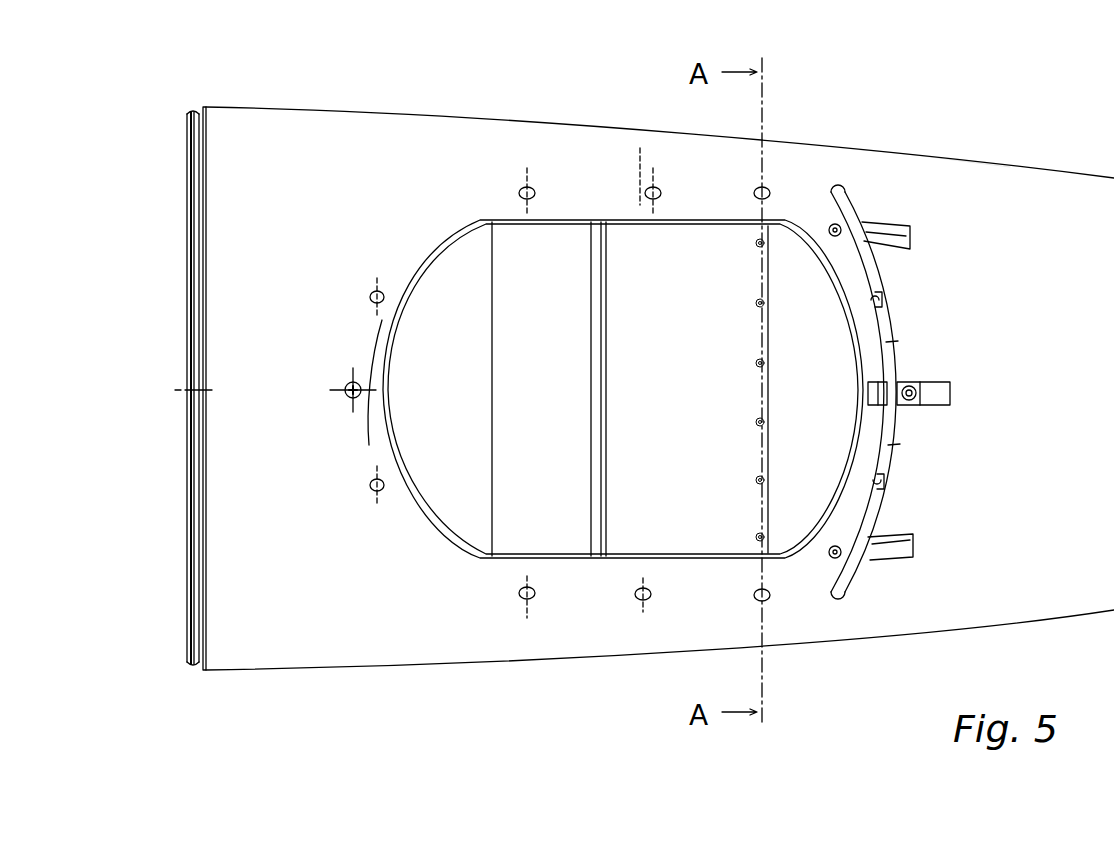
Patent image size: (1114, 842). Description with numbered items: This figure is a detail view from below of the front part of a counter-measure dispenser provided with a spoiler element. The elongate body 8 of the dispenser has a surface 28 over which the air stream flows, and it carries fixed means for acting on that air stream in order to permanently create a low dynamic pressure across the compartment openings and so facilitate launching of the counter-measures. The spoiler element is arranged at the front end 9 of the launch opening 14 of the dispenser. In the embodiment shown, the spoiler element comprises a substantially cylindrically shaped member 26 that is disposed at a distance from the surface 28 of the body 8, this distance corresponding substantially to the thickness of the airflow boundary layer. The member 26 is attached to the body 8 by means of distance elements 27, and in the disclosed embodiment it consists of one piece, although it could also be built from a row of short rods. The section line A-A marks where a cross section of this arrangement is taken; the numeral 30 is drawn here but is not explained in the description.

The elongate body 8 is at (948, 172).
The front end 9 is at (816, 106).
The launch opening 14 is at (694, 545).
The substantially cylindrically shaped member 26 is at (890, 326).
The distance elements 27 is at (912, 526).
The surface 28 is at (882, 166).
The fastening tabs 30 is at (850, 196).